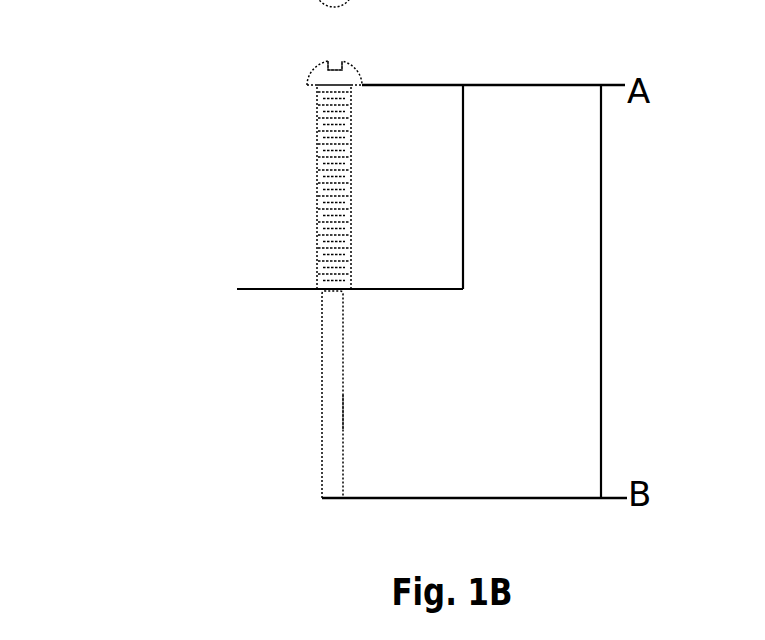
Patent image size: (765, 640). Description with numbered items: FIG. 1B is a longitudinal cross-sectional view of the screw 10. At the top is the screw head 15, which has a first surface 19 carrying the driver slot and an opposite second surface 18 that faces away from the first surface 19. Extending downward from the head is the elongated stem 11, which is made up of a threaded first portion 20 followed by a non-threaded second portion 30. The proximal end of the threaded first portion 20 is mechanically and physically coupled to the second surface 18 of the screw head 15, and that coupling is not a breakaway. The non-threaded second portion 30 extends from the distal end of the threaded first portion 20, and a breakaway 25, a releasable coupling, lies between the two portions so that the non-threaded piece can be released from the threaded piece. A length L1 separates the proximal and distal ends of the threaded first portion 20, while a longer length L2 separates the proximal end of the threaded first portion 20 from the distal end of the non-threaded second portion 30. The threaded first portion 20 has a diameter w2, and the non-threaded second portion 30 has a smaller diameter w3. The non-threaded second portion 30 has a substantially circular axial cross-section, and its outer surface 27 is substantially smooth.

The screw 10 is at (160, 58).
The screw head 15 is at (301, 64).
The first surface 19 is at (348, 72).
The second surface 18 is at (364, 101).
The elongated stem 11 is at (296, 247).
The threaded first portion 20 is at (325, 112).
The breakaway 25 is at (330, 285).
The non-threaded second portion 30 is at (333, 387).
The outer surface 27 is at (343, 412).
The length L1 is at (463, 223).
The length L2 is at (601, 348).
The diameter w2 is at (352, 217).
The diameter w3 is at (344, 348).